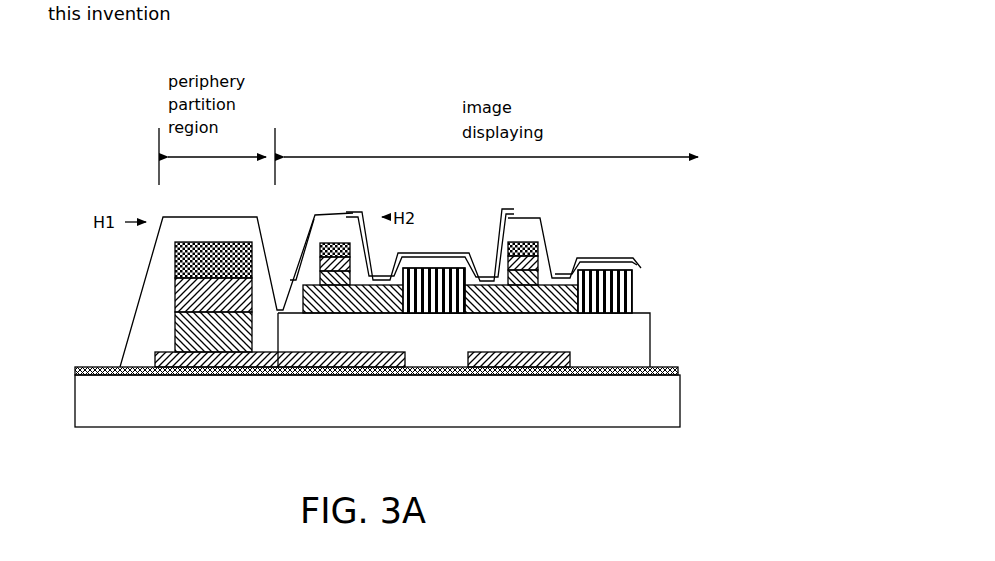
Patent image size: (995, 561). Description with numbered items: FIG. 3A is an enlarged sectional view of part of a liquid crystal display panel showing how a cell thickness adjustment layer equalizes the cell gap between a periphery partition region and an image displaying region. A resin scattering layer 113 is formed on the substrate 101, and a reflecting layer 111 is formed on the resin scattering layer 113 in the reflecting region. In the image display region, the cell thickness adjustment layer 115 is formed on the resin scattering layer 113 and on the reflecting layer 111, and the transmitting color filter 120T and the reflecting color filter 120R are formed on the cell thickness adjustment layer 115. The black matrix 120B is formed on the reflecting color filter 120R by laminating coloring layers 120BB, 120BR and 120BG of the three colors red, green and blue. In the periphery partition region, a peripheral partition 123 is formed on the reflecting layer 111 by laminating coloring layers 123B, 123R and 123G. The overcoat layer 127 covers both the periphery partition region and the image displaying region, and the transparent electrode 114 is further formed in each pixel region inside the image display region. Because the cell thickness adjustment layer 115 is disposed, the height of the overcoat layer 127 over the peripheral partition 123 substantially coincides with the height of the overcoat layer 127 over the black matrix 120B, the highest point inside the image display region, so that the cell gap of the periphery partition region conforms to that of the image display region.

The substrate 101 is at (628, 410).
The reflecting layer 111 is at (517, 367).
The resin scattering layer 113 is at (678, 366).
The cell thickness adjustment layer 115 is at (640, 337).
The reflecting color filter 120R is at (477, 298).
The transmitting color filter 120T is at (440, 268).
The overcoat layer 127 is at (318, 216).
The transparent electrode 114 is at (506, 216).
The black matrix 120B is at (626, 226).
The green coloring layer of the black matrix 120BG is at (536, 248).
The red coloring layer of the black matrix 120BR is at (536, 262).
The blue coloring layer of the black matrix 120BB is at (536, 278).
The peripheral partition 123 is at (136, 294).
The green coloring layer of the peripheral partition 123G is at (177, 270).
The red coloring layer of the peripheral partition 123R is at (177, 305).
The blue coloring layer of the peripheral partition 123B is at (163, 332).